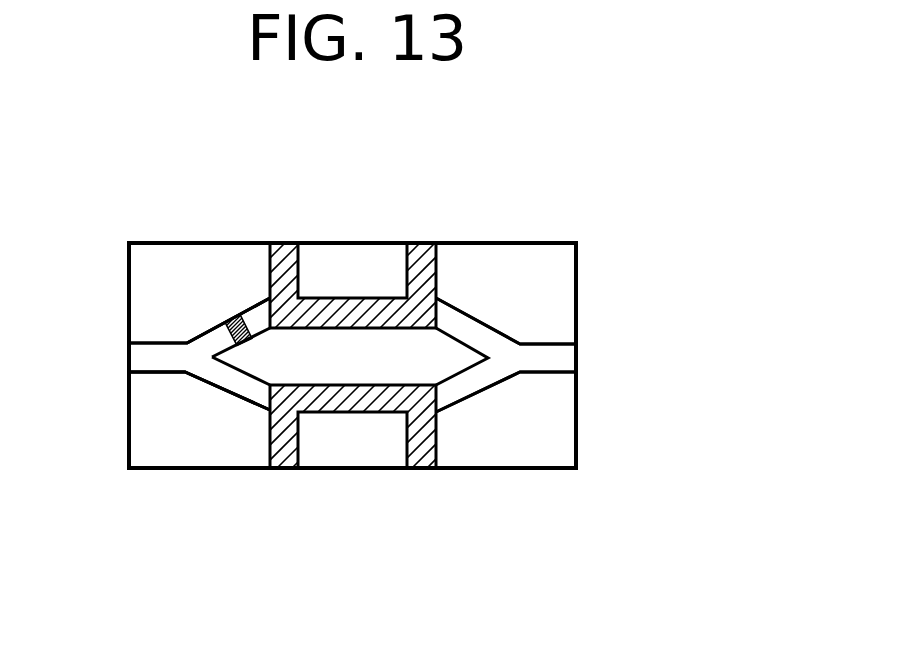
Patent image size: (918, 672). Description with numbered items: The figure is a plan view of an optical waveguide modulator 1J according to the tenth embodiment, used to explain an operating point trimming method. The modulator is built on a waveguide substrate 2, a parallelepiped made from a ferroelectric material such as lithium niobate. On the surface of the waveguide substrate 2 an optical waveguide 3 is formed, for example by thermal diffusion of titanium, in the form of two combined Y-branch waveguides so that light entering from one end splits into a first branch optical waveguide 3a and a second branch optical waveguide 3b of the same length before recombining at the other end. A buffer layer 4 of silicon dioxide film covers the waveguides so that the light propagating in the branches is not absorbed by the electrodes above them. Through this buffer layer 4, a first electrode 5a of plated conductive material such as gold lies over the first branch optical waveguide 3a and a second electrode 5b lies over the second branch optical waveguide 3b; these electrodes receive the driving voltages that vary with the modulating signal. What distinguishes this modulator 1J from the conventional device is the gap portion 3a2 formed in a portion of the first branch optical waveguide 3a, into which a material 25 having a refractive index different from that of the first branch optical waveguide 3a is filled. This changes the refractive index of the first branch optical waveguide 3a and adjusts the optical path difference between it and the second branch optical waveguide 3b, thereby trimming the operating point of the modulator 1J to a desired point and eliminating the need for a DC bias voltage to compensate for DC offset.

The optical waveguide modulator 1J is at (382, 223).
The waveguide substrate 2 is at (541, 468).
The optical waveguide 3 is at (150, 342).
The first branch optical waveguide 3a is at (192, 340).
The gap portion 3a2 is at (235, 314).
The second branch optical waveguide 3b is at (232, 397).
The buffer layer 4 is at (167, 415).
The first electrode 5a is at (329, 296).
The second electrode 5b is at (353, 412).
The material with different refractive index 25 is at (222, 320).